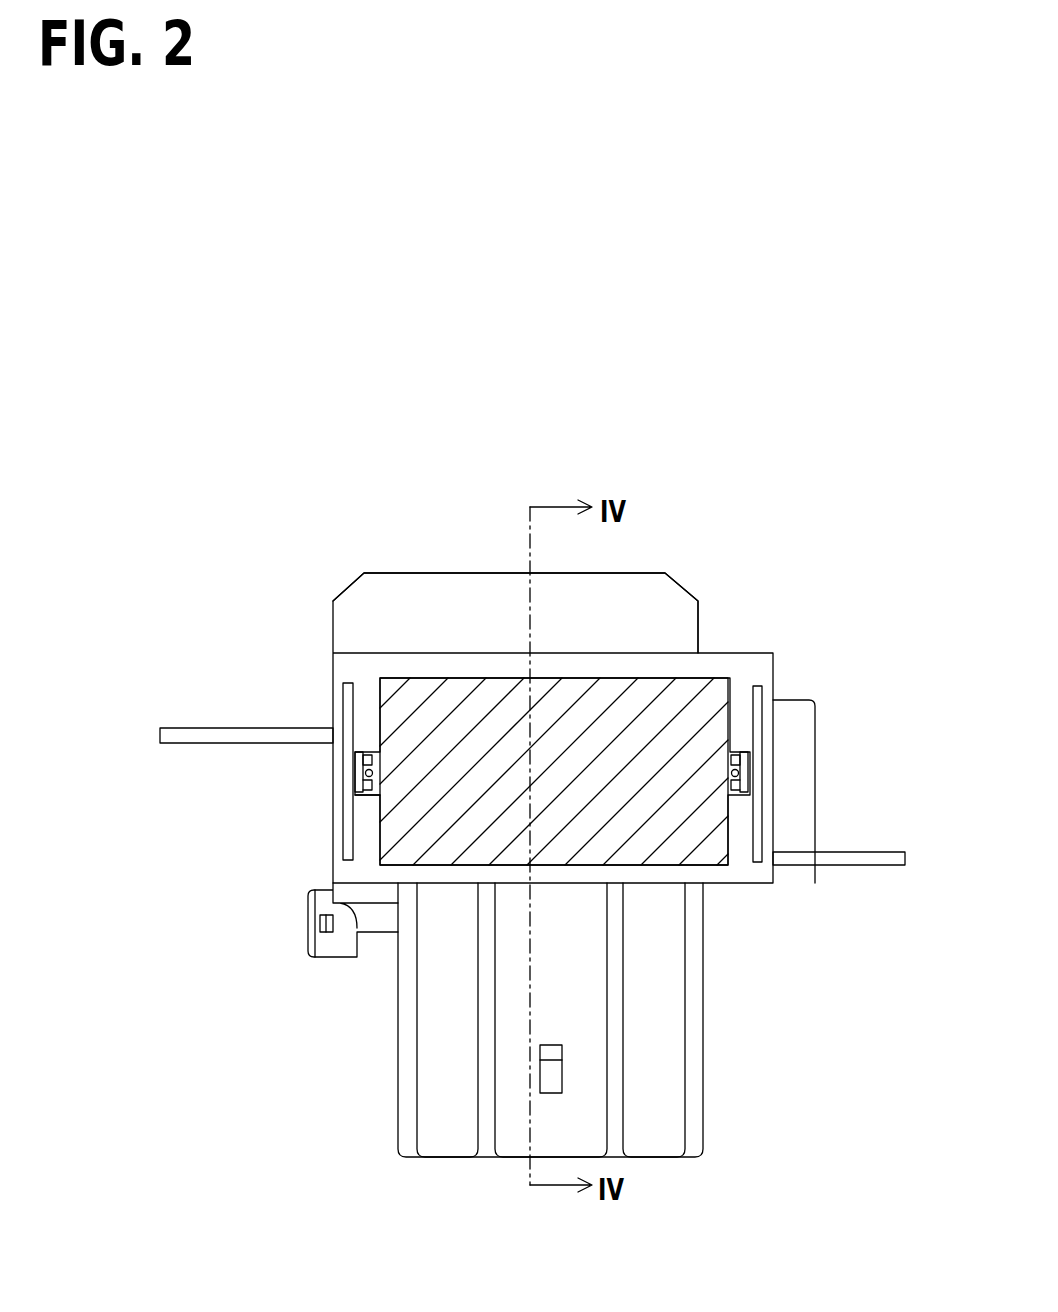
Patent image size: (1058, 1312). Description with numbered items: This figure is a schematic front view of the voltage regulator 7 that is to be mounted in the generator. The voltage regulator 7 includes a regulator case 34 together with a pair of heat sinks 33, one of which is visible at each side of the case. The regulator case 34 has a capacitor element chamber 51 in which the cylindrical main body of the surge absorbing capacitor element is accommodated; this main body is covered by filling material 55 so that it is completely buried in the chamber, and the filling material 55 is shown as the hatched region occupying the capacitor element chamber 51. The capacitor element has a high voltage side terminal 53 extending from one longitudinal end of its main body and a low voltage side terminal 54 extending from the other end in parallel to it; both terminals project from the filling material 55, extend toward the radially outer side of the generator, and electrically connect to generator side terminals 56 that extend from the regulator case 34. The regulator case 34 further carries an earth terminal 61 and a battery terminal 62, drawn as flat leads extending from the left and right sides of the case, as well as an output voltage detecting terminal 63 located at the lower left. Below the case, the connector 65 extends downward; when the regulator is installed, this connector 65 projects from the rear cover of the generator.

The voltage regulator 7 is at (705, 489).
The heat sinks 33 is at (348, 716).
The regulator case 34 is at (647, 667).
The capacitor element chamber 51 is at (645, 865).
The high voltage side terminal 53 is at (773, 700).
The low voltage side terminal 54 is at (375, 797).
The filling material 55 is at (433, 848).
The generator side terminals 56 is at (352, 774).
The earth terminal 61 is at (221, 735).
The battery terminal 62 is at (837, 860).
The output voltage detecting terminal 63 is at (323, 946).
The connector 65 is at (647, 1108).